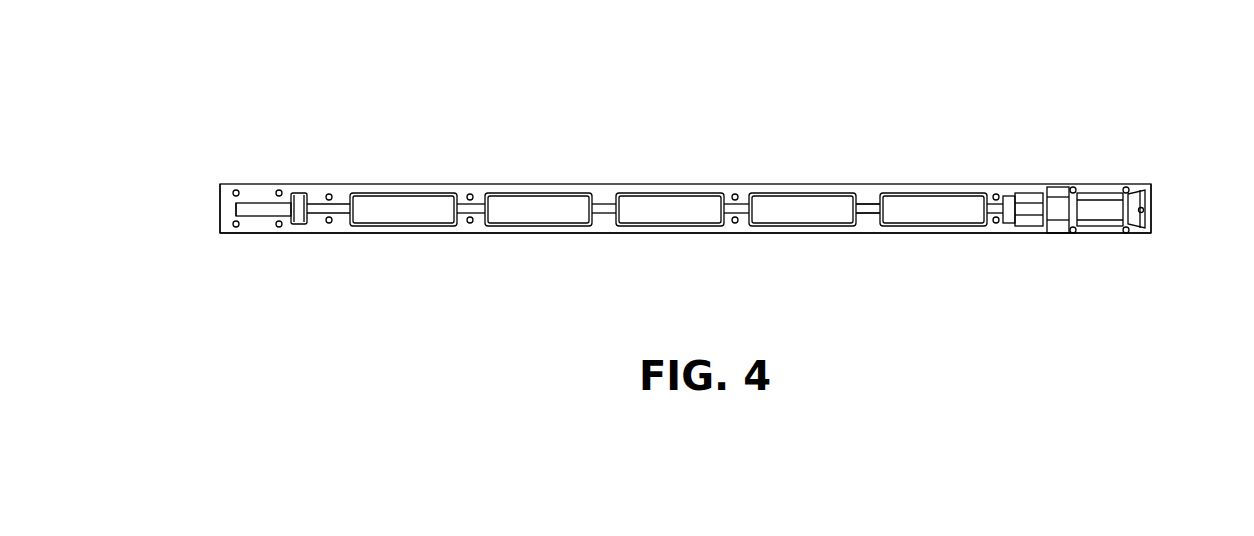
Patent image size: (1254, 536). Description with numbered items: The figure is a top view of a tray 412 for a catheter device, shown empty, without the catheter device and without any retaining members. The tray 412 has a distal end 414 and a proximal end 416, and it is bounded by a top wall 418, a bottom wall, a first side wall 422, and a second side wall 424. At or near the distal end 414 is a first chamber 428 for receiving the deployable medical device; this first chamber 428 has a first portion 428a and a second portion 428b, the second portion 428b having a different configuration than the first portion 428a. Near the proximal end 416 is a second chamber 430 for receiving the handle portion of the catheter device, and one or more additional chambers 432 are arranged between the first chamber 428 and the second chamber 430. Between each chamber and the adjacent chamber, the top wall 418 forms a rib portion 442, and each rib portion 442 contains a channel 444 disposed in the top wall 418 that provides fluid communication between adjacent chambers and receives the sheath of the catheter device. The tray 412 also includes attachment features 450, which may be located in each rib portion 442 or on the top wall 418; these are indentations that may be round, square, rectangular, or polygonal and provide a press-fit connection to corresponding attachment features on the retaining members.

The tray 412 is at (666, 182).
The distal end 414 is at (220, 206).
The proximal end 416 is at (1151, 192).
The top wall 418 is at (604, 223).
The first side wall 422 is at (427, 236).
The second side wall 424 is at (428, 192).
The first chamber 428 is at (259, 211).
The first portion 428a is at (245, 200).
The second portion 428b is at (299, 224).
The second chamber 430 is at (1100, 193).
The additional chambers 432 is at (800, 210).
The rib portion 442 is at (871, 226).
The channel 444 is at (873, 193).
The attachment features 450 is at (282, 189).